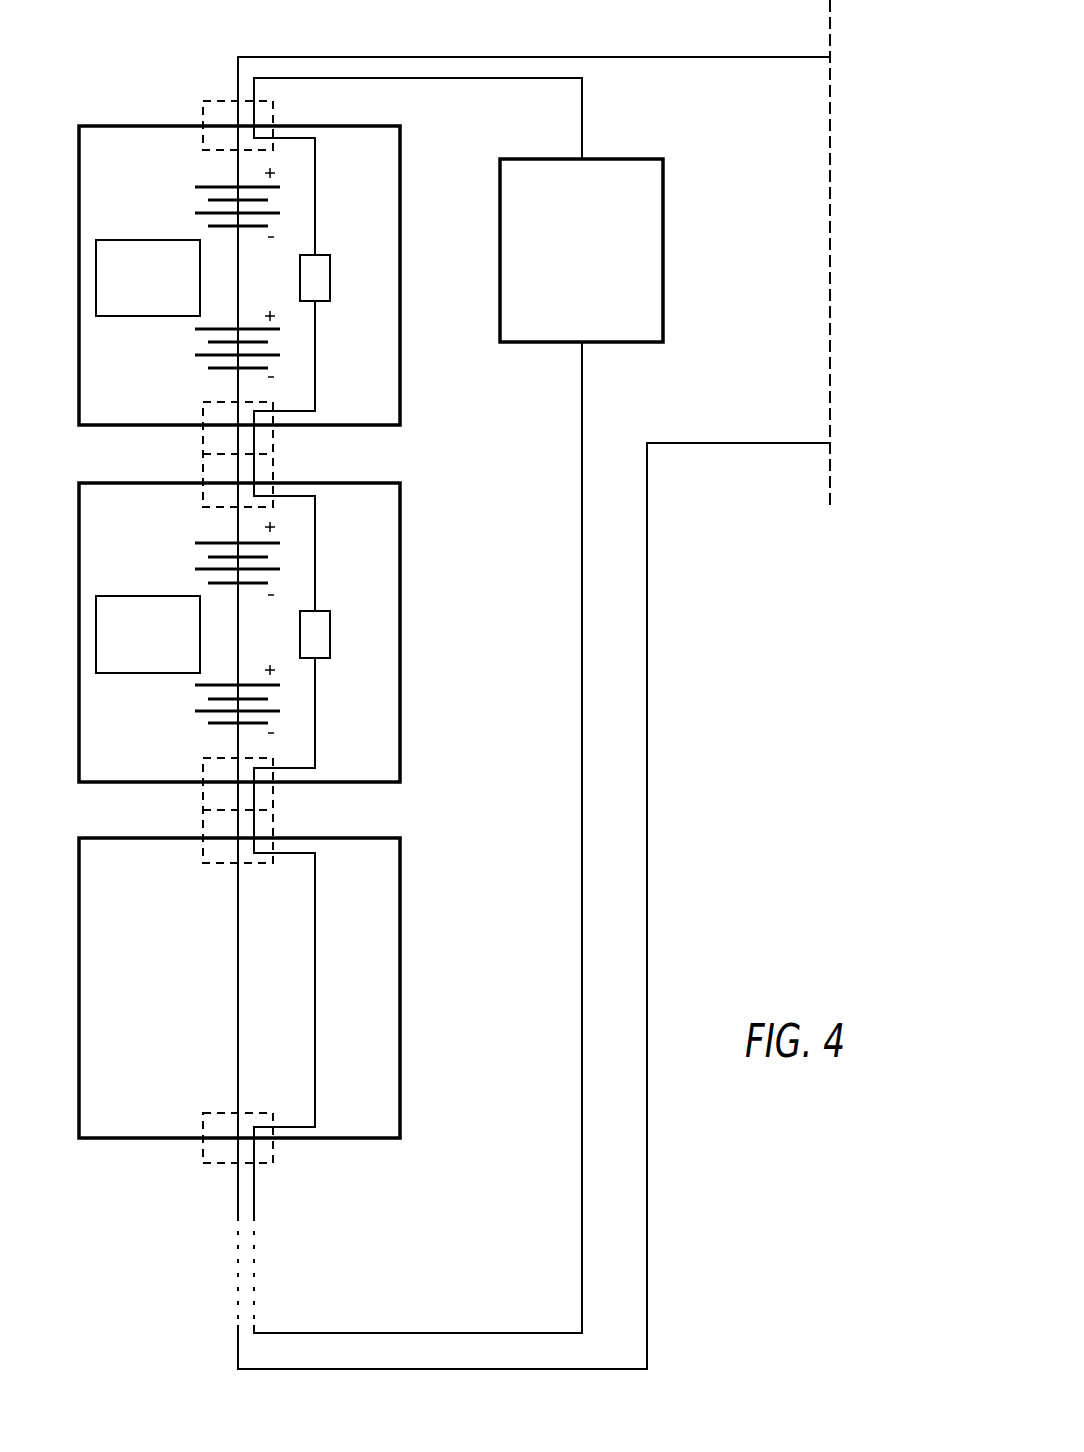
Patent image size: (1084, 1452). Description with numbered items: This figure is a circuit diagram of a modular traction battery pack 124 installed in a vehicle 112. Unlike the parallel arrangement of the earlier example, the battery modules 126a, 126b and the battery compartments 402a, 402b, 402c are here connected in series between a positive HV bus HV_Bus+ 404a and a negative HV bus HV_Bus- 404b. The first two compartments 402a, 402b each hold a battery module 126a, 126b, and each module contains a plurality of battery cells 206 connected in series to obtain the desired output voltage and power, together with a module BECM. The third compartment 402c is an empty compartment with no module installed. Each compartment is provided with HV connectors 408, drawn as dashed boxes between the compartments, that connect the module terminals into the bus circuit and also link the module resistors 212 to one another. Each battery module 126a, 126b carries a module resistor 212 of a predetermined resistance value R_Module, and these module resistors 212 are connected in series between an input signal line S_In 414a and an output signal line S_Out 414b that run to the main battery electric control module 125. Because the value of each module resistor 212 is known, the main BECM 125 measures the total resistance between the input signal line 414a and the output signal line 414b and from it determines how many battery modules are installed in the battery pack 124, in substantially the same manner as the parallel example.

The vehicle 112 is at (912, 284).
The traction battery 124 is at (598, 31).
The battery electric control module 125 is at (564, 296).
The battery module 126a is at (165, 391).
The battery module 126b is at (165, 746).
The battery cell 206 is at (213, 187).
The module resistor 212 is at (322, 255).
The battery compartment 402a is at (400, 145).
The battery compartment 402b is at (400, 503).
The battery compartment 402c is at (400, 862).
The positive HV bus 404a is at (763, 115).
The negative HV bus 404b is at (763, 512).
The HV connector 408 is at (203, 112).
The input signal line 414a is at (583, 113).
The output signal line 414b is at (585, 419).